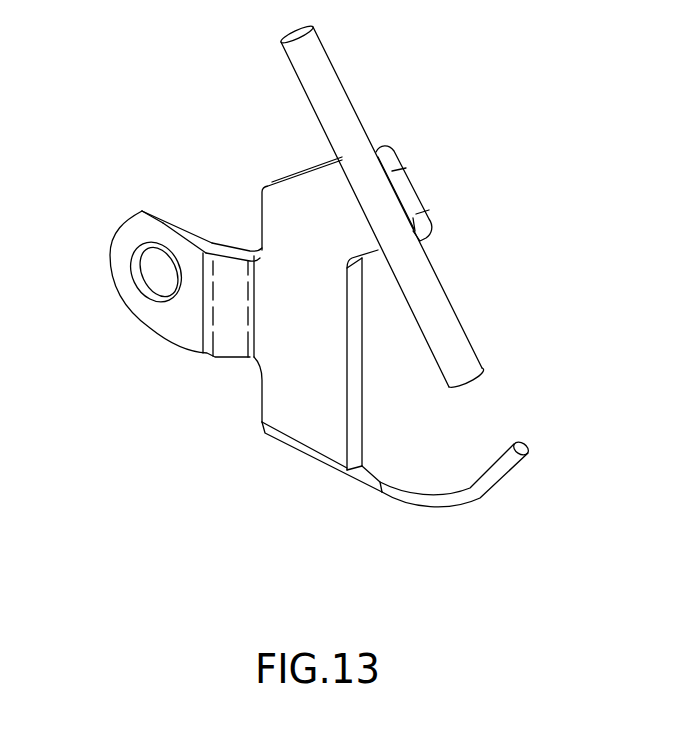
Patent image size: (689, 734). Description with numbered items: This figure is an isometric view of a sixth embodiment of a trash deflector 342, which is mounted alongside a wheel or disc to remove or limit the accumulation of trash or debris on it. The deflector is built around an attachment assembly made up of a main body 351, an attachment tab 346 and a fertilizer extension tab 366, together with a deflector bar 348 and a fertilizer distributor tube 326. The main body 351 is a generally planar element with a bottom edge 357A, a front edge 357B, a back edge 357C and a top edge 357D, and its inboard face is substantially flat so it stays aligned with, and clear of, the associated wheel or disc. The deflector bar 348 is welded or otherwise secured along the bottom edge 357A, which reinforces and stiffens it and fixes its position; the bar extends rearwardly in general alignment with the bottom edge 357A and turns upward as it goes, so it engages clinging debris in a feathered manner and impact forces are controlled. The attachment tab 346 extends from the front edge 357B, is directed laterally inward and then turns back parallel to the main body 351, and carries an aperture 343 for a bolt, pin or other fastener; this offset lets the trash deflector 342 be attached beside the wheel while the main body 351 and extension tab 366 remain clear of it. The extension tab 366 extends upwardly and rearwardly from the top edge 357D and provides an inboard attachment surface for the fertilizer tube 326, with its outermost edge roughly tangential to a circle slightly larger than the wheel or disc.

The trash deflector 342 is at (480, 148).
The fertilizer distributor tube 326 is at (437, 316).
The fertilizer extension tab 366 is at (317, 190).
The main body 351 is at (282, 378).
The attachment tab 346 is at (173, 317).
The aperture 343 is at (155, 267).
The front edge 357B is at (267, 297).
The back edge 357C is at (340, 358).
The top edge 357D is at (303, 253).
The bottom edge 357A is at (297, 433).
The deflector bar 348 is at (370, 487).